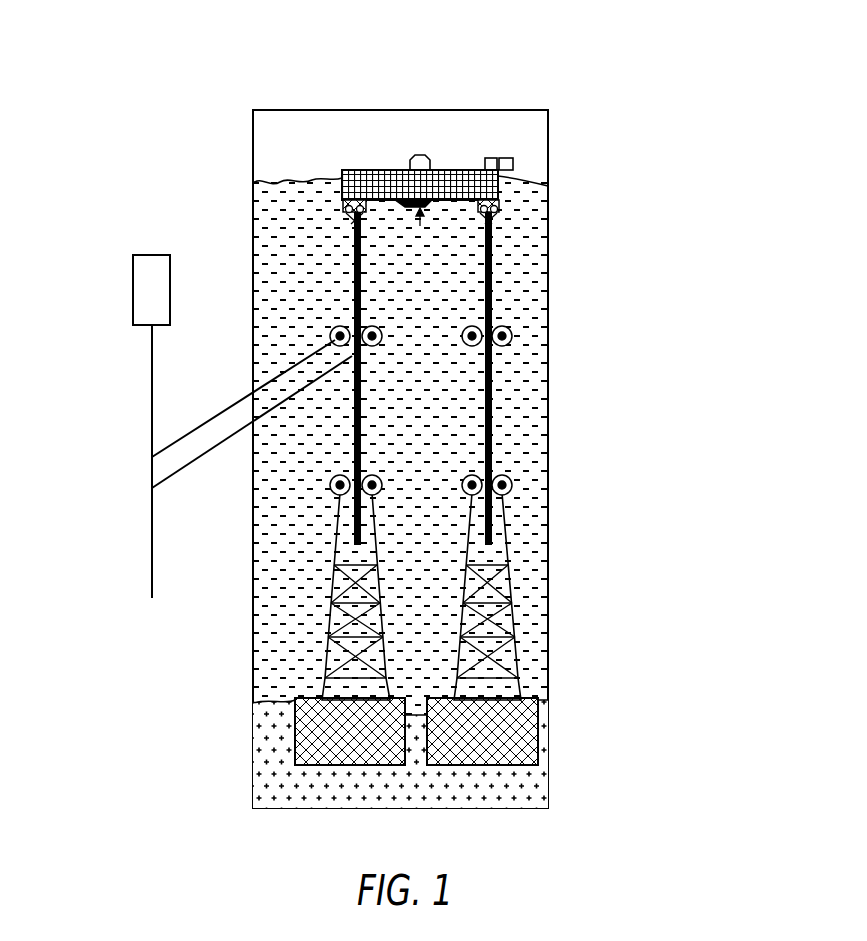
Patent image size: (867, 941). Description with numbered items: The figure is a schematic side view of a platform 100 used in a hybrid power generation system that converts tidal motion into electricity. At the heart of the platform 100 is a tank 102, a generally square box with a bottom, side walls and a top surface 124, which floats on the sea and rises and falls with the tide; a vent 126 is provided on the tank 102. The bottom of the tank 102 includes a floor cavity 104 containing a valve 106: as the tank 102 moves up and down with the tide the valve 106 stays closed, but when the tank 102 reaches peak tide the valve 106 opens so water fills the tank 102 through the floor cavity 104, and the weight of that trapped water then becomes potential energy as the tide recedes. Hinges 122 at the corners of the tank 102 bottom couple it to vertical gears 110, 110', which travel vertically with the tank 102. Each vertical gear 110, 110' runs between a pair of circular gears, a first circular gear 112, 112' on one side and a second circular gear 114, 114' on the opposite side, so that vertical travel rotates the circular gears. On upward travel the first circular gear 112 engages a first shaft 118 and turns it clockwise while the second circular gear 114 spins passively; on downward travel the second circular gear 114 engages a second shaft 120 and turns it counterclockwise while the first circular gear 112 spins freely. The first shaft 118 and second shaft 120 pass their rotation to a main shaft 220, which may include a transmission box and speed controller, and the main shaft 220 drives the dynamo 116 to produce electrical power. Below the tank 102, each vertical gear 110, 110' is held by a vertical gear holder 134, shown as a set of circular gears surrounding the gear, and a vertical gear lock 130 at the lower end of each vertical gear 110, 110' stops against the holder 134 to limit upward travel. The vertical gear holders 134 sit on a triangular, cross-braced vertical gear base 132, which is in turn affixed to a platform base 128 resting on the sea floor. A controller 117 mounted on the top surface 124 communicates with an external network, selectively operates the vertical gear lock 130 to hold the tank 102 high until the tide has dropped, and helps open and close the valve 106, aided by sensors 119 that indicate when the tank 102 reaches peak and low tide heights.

The platform 100 is at (642, 56).
The tank 102 is at (470, 170).
The floor cavity 104 is at (407, 203).
The valve 106 is at (420, 205).
The vertical gear 110 is at (264, 385).
The vertical gear 110' is at (565, 372).
The first circular gear 112 is at (259, 346).
The first circular gear 112' is at (540, 296).
The second circular gear 114 is at (489, 270).
The second circular gear 114' is at (568, 326).
The dynamo 116 is at (148, 287).
The controller 117 is at (492, 157).
The first shaft 118 is at (195, 430).
The sensor 119 is at (507, 157).
The second shaft 120 is at (202, 458).
The hinge 122 is at (425, 205).
The top surface 124 is at (352, 168).
The vent 126 is at (425, 155).
The platform base 128 is at (313, 748).
The vertical gear lock 130 is at (335, 548).
The vertical gear base 132 is at (325, 675).
The vertical gear holder 134 is at (505, 477).
The main shaft 220 is at (148, 540).